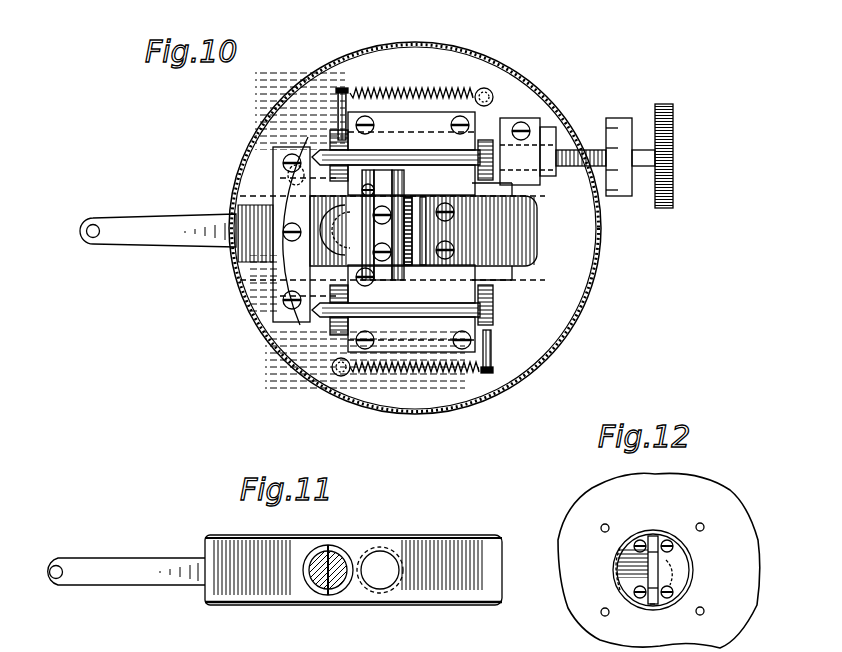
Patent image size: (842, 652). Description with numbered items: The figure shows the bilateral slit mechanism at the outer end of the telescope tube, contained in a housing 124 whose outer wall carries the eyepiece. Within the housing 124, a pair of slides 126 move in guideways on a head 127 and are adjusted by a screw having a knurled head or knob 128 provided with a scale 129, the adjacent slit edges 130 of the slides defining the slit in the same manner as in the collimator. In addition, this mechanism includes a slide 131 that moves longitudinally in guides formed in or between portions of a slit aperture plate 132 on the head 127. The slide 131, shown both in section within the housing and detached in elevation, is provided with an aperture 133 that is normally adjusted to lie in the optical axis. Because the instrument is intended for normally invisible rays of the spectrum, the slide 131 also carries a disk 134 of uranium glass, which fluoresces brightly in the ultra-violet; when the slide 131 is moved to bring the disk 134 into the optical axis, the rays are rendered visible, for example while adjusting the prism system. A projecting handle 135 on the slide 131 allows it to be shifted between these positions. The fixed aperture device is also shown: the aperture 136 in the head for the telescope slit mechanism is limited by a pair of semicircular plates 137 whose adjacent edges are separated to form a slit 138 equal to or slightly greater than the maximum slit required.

In FIG. 10, the housing 124 is at (596, 295).
In FIG. 10, the slides 126 is at (492, 138).
In FIG. 10, the head 127 is at (588, 270).
In FIG. 10, the knurled head or knob 128 is at (668, 104).
In FIG. 10, the scale 129 is at (622, 116).
In FIG. 10, the slit edges 130 is at (410, 262).
In FIG. 10, the slide 131 is at (535, 222).
In FIG. 11, the slide 131 is at (470, 543).
In FIG. 10, the slit aperture plate 132 is at (410, 183).
In FIG. 10, the aperture 133 is at (376, 192).
In FIG. 11, the aperture 133 is at (384, 585).
In FIG. 10, the disk of uranium glass 134 is at (345, 228).
In FIG. 11, the disk of uranium glass 134 is at (322, 578).
In FIG. 10, the projecting handle 135 is at (152, 244).
In FIG. 11, the projecting handle 135 is at (128, 560).
In FIG. 12, the aperture 136 is at (672, 564).
In FIG. 12, the semicircular plates 137 is at (673, 538).
In FIG. 12, the slit 138 is at (652, 604).